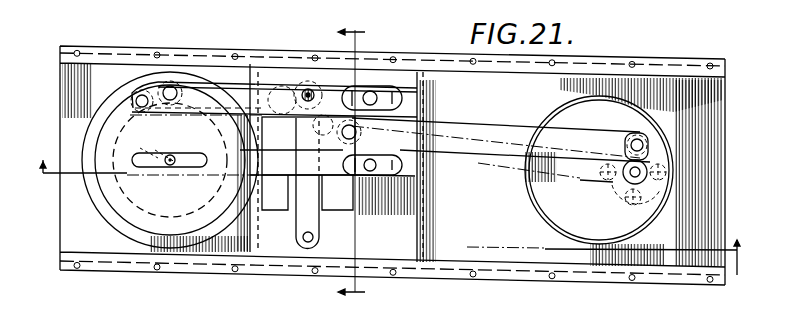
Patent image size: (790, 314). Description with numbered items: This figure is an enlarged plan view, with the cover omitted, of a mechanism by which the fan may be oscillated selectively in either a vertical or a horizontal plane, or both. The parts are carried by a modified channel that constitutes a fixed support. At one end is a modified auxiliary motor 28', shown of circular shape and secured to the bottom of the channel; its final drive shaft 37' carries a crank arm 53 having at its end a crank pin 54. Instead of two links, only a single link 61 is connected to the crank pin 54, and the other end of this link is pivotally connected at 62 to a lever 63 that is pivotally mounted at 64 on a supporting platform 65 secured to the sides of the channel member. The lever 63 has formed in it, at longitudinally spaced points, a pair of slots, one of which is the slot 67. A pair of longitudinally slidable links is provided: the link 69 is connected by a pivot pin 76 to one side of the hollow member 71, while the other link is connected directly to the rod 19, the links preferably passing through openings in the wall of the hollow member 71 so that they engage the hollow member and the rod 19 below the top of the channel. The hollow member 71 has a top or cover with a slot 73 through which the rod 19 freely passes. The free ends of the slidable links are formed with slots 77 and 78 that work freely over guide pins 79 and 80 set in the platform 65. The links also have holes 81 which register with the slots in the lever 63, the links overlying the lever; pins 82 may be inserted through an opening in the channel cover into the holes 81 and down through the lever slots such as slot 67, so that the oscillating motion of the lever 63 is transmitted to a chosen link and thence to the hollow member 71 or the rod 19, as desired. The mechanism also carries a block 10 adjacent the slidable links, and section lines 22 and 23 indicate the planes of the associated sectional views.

The block 10 is at (275, 192).
The rod 19 is at (172, 166).
The section line 22 is at (387, 208).
The section line 23 is at (330, 161).
The auxiliary motor 28' is at (592, 172).
The final drive shaft 37' is at (630, 196).
The crank arm 53 is at (655, 168).
The crank pin 54 is at (633, 138).
The link 61 is at (518, 120).
The pivot 62 is at (357, 132).
The lever 63 is at (304, 138).
The pivot 64 is at (301, 237).
The supporting platform 65 is at (402, 242).
The slot 67 is at (309, 89).
The link 69 is at (231, 85).
The hollow member 71 is at (117, 210).
The slot 73 is at (153, 157).
The pivot pin 76 is at (172, 88).
The slot 77 is at (352, 97).
The slot 78 is at (348, 177).
The guide pin 79 is at (378, 93).
The guide pin 80 is at (379, 202).
The hole 81 is at (362, 165).
The pin 82 is at (317, 92).